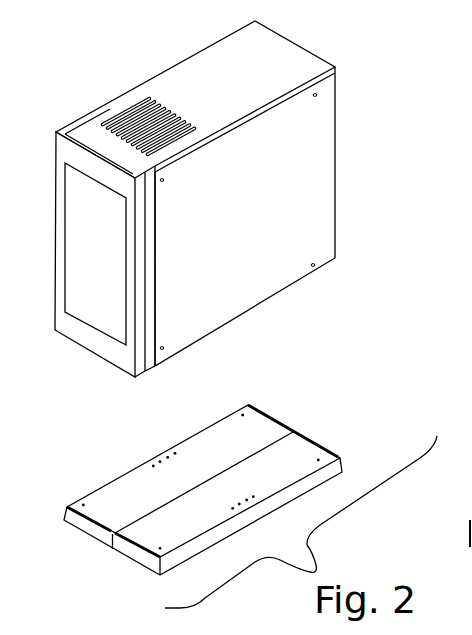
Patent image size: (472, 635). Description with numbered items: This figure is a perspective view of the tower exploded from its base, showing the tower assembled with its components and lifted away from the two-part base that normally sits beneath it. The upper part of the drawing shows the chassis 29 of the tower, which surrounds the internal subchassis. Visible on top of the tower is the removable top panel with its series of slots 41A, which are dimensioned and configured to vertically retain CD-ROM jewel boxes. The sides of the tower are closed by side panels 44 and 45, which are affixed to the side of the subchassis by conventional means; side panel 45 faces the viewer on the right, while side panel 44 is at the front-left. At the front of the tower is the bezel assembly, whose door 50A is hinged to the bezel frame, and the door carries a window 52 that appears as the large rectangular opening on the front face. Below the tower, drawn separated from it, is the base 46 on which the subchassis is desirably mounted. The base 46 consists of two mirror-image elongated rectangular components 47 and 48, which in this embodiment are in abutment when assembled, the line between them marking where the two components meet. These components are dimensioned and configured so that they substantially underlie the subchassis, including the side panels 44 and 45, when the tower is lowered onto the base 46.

The chassis 29 is at (330, 37).
The slots 41A is at (147, 96).
The side panel 44 is at (84, 117).
The side panel 45 is at (263, 237).
The base 46 is at (312, 428).
The component 47 is at (158, 504).
The component 48 is at (216, 522).
The door 50A is at (318, 450).
The window 52 is at (113, 272).